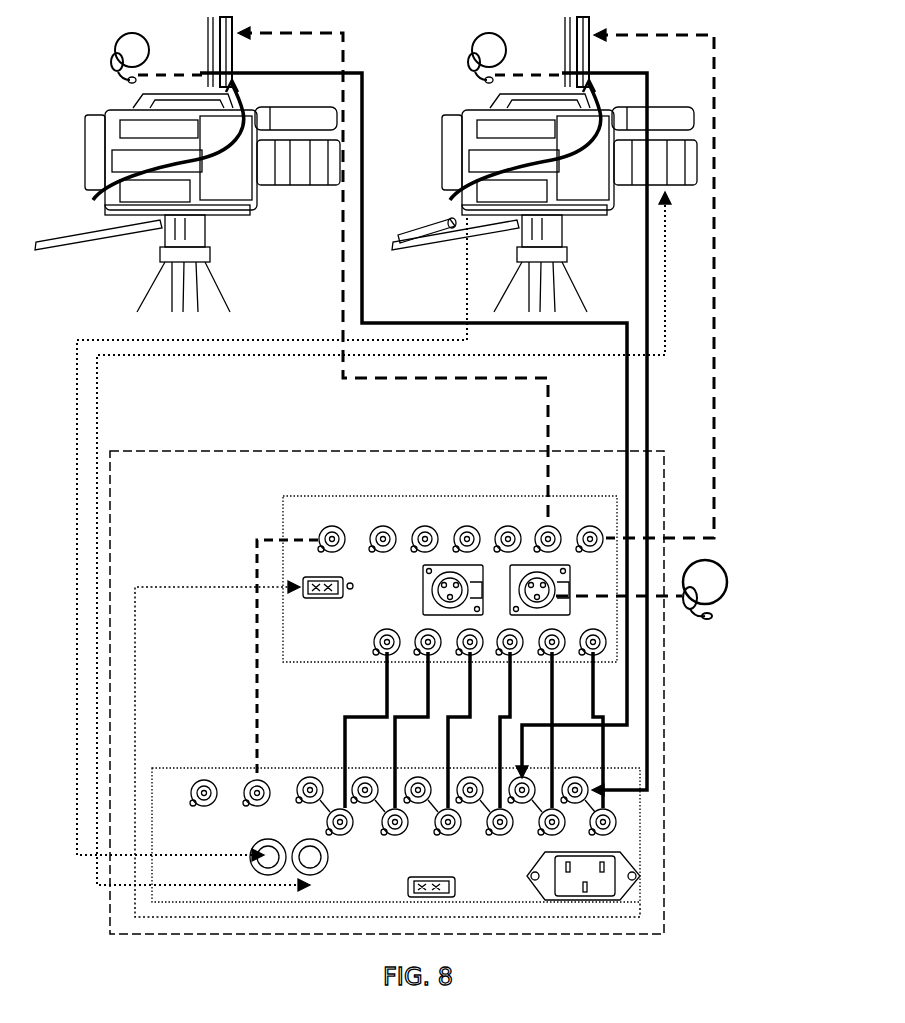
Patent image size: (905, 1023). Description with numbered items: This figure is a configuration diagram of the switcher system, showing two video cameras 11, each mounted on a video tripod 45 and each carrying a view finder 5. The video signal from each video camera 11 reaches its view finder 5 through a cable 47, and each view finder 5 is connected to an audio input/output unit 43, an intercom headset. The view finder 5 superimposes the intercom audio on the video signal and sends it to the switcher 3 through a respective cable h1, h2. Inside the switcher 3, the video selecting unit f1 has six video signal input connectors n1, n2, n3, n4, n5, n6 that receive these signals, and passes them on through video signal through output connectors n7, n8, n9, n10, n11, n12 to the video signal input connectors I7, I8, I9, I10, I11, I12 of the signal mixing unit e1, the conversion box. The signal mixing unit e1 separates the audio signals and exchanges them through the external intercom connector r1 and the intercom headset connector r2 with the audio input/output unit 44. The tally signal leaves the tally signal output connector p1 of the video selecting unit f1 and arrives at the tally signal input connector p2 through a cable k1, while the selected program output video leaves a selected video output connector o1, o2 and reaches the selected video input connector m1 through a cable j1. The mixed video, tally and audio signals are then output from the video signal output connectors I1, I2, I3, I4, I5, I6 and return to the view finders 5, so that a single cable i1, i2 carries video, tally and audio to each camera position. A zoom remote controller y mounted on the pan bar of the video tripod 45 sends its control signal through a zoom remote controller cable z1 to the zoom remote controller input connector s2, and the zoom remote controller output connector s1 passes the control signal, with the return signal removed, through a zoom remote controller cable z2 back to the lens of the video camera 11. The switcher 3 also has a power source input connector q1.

The view finder 5 is at (207, 22).
The audio input/output unit 43 is at (114, 46).
The video camera 11 is at (122, 108).
The cable 47 is at (93, 200).
The video tripod 45 is at (160, 232).
The zoom remote controller y is at (420, 224).
The cable i1 is at (714, 230).
The cable i2 is at (343, 298).
The cable h1 is at (648, 396).
The cable h2 is at (363, 290).
The zoom remote controller cable z1 is at (77, 500).
The zoom remote controller cable z2 is at (98, 416).
The cable k1 is at (135, 634).
The cable j1 is at (257, 688).
The switcher 3 is at (387, 680).
The signal mixing unit e1 is at (283, 502).
The video selecting unit f1 is at (640, 796).
The selected video input connector m1 is at (335, 526).
The video signal output connector I1 is at (591, 526).
The video signal output connector I2 is at (549, 526).
The video signal output connector I3 is at (509, 526).
The video signal output connector I4 is at (468, 526).
The video signal output connector I5 is at (426, 526).
The video signal output connector I6 is at (384, 526).
The video signal input connector I7 is at (599, 654).
The video signal input connector I8 is at (558, 654).
The video signal input connector I9 is at (516, 654).
The video signal input connector I10 is at (476, 654).
The video signal input connector I11 is at (434, 654).
The video signal input connector I12 is at (393, 654).
The tally signal input connector p2 is at (323, 598).
The external intercom connector r1 is at (430, 586).
The intercom headset connector r2 is at (560, 570).
The audio input/output unit 44 is at (722, 565).
The selected video output connector o1 is at (260, 780).
The selected video output connector o2 is at (204, 780).
The video signal input connector n1 is at (575, 777).
The video signal input connector n2 is at (522, 777).
The video signal input connector n3 is at (470, 777).
The video signal input connector n4 is at (418, 777).
The video signal input connector n5 is at (365, 777).
The video signal input connector n6 is at (310, 777).
The video signal through output connector n7 is at (616, 834).
The video signal through output connector n8 is at (566, 830).
The video signal through output connector n9 is at (505, 835).
The video signal through output connector n10 is at (453, 835).
The video signal through output connector n11 is at (400, 835).
The video signal through output connector n12 is at (345, 835).
The zoom remote controller output connector s1 is at (303, 842).
The zoom remote controller input connector s2 is at (250, 850).
The tally signal output connector p1 is at (425, 898).
The power source input connector q1 is at (636, 888).